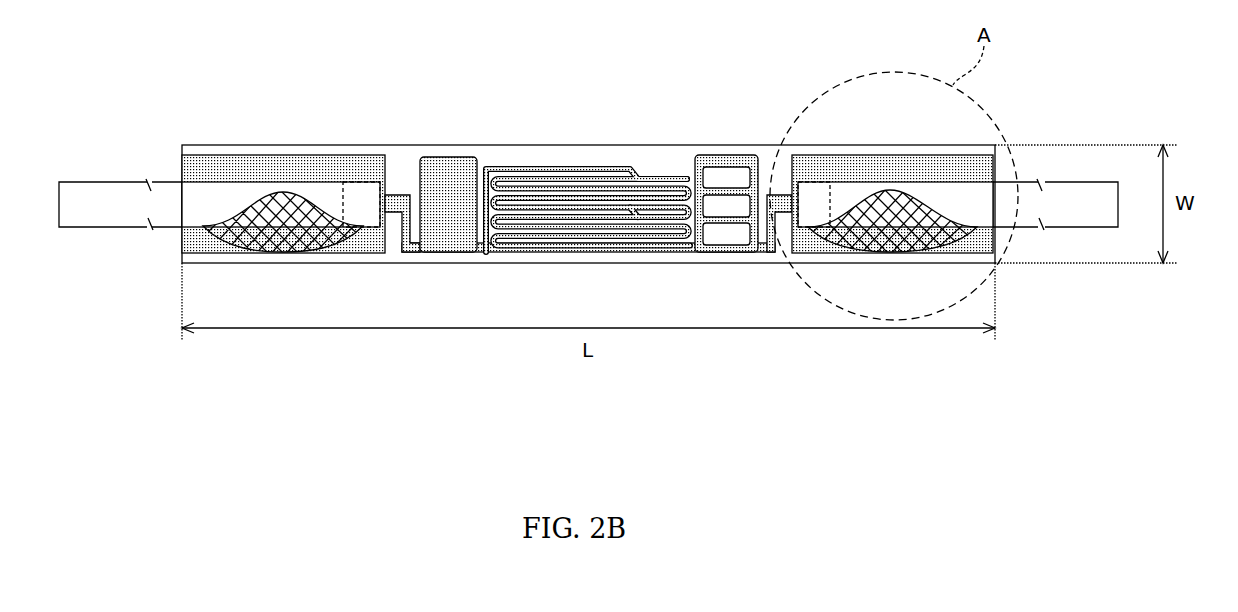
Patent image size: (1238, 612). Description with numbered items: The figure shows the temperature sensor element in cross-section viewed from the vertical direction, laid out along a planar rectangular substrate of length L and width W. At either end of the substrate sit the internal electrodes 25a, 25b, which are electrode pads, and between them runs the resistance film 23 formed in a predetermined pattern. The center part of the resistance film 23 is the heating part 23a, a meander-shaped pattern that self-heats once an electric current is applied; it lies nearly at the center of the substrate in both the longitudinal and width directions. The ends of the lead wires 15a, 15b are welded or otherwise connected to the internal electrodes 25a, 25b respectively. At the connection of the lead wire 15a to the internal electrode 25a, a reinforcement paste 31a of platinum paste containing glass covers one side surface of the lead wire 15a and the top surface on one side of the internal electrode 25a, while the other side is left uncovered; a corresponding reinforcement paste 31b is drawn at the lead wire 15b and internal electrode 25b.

The lead wire 15a is at (1079, 215).
The lead wire 15b is at (105, 197).
The resistance film 23 is at (450, 158).
The heating part 23a is at (688, 132).
The internal electrode 25a is at (898, 165).
The internal electrode 25b is at (287, 160).
The reinforcement paste 31a is at (893, 237).
The mesh bonding portion (second) 31b is at (283, 243).